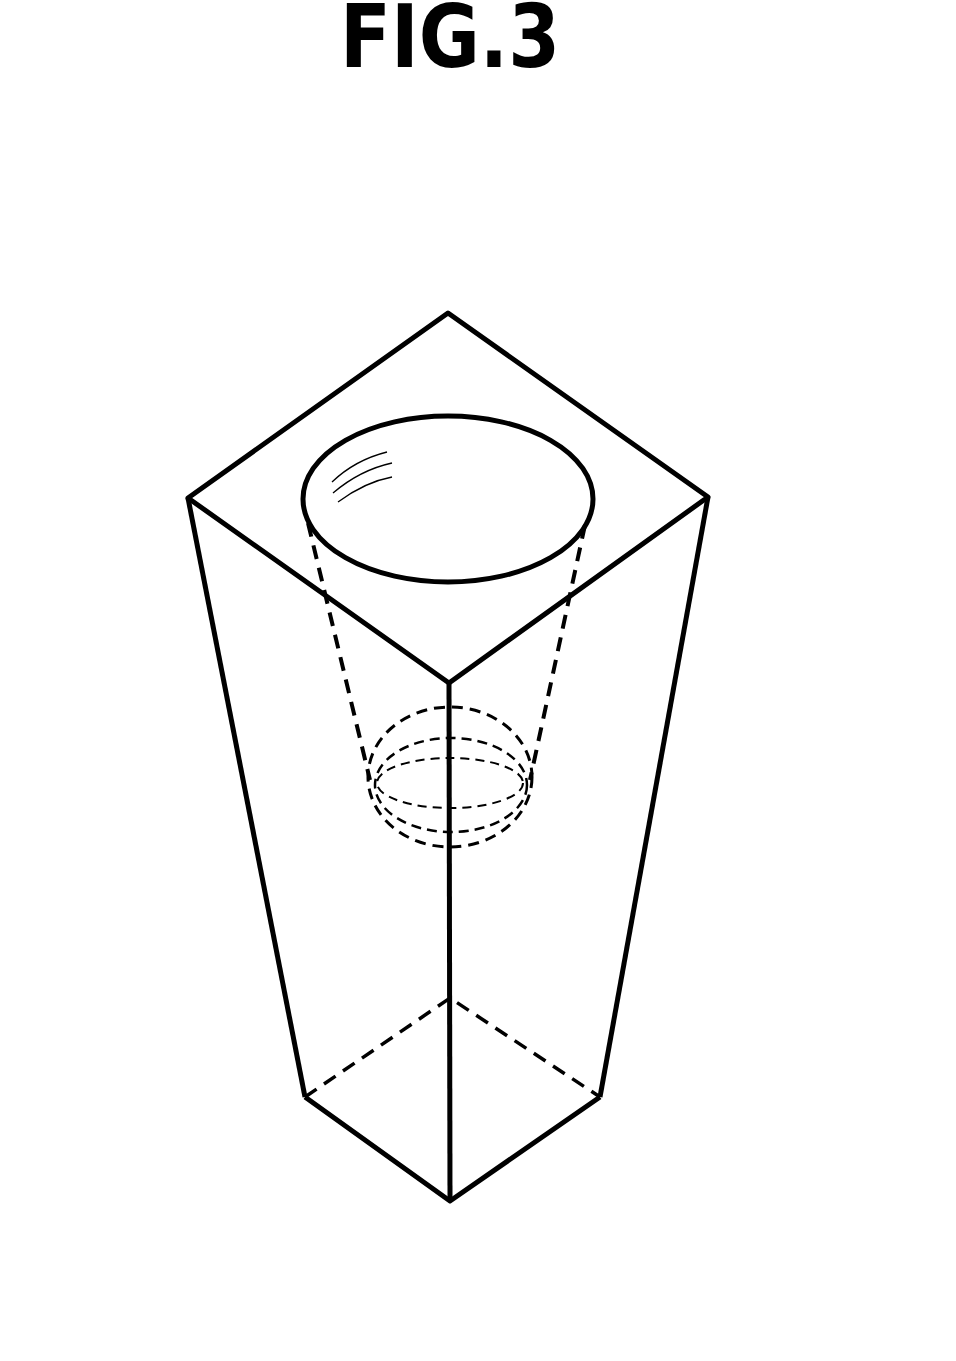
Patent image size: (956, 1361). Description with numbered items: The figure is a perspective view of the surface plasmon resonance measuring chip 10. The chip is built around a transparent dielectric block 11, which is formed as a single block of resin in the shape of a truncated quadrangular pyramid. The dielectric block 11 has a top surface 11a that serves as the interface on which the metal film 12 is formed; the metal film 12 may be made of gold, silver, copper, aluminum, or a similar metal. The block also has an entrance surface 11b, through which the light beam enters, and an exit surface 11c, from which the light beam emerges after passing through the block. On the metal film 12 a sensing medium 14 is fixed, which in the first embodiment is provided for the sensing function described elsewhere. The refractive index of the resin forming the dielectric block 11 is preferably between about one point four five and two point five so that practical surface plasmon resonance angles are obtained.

The measuring chip 10 is at (470, 246).
The dielectric block 11 is at (350, 1148).
The top surface 11a is at (487, 847).
The entrance surface 11b is at (260, 800).
The exit surface 11c is at (652, 822).
The metal film 12 is at (530, 827).
The sensing medium 14 is at (508, 717).